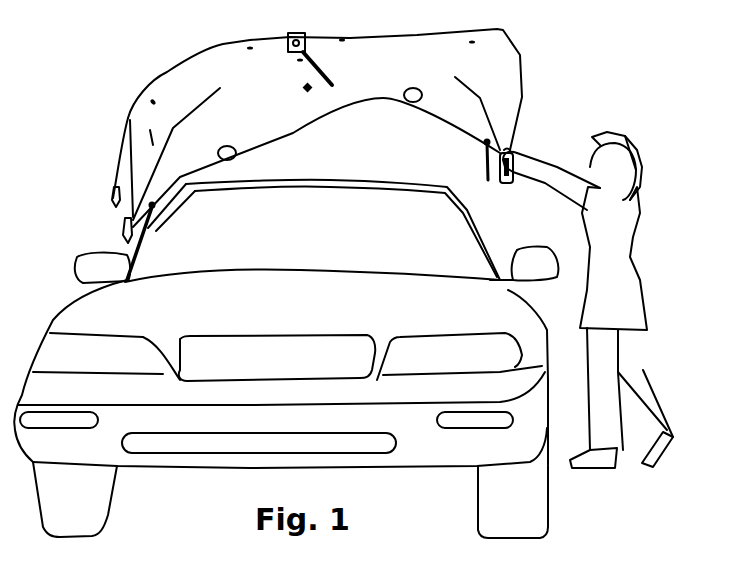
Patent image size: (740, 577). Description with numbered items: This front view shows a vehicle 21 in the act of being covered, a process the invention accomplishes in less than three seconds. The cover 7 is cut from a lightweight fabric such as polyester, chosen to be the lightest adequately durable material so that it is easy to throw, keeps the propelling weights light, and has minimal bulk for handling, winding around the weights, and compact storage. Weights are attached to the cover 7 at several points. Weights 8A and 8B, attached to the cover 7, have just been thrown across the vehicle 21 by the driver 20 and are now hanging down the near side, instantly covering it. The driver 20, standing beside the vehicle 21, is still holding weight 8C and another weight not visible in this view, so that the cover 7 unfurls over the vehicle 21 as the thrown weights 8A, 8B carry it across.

The cover 7 is at (213, 70).
The weight 8A is at (122, 233).
The weight 8B is at (110, 191).
The weight 8C is at (505, 187).
The driver 20 is at (623, 238).
The vehicle 21 is at (88, 313).